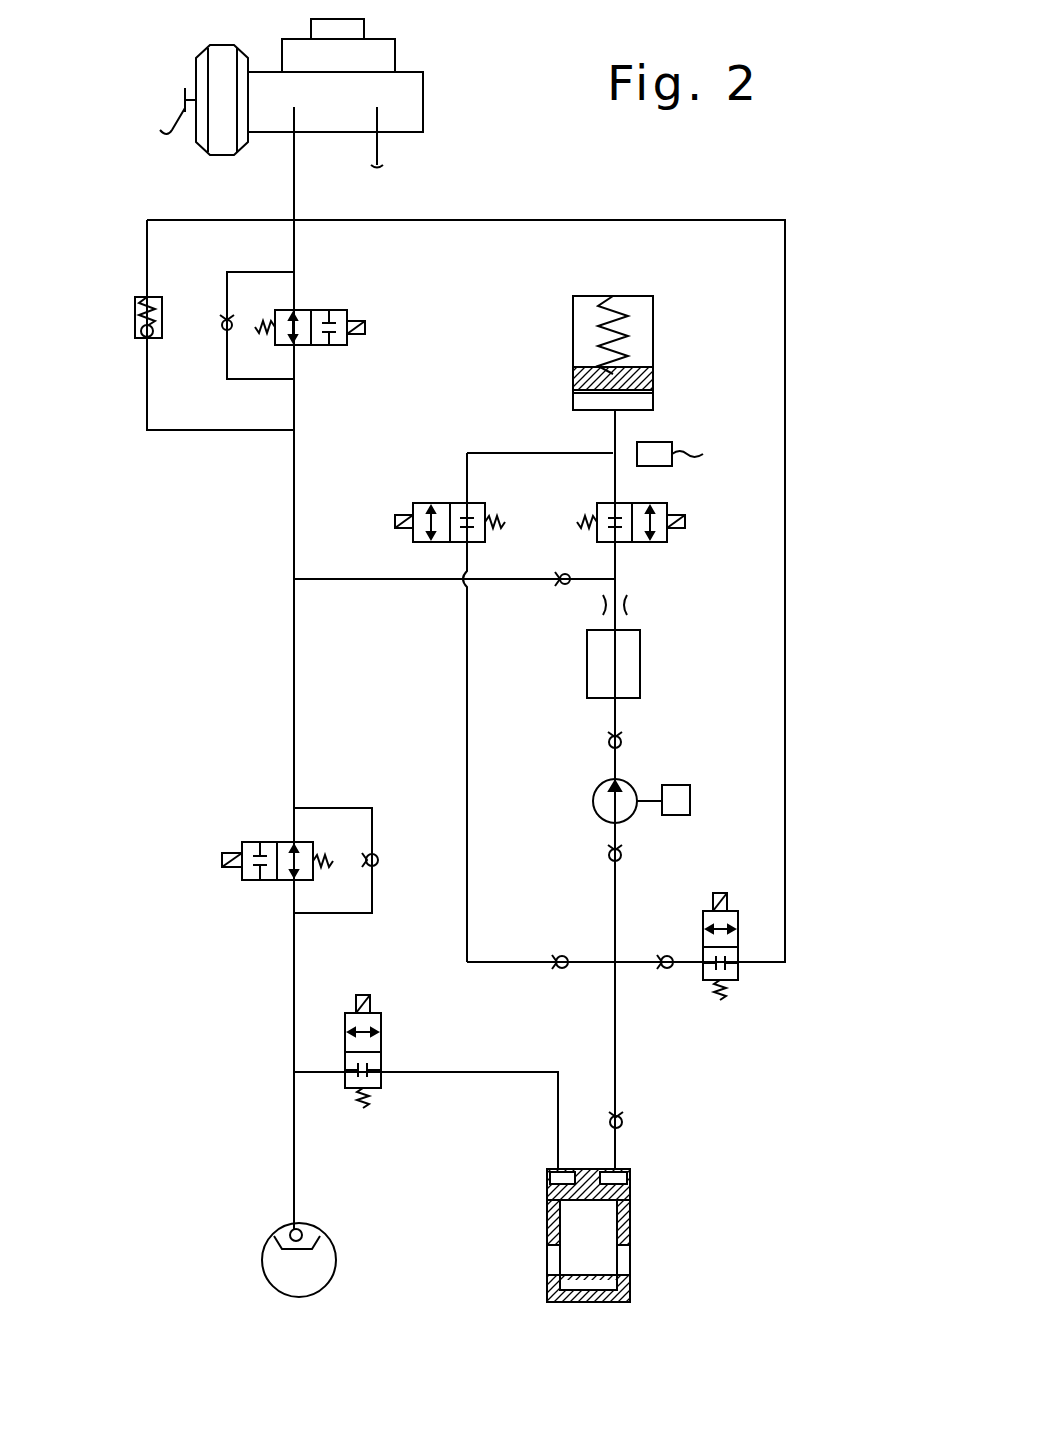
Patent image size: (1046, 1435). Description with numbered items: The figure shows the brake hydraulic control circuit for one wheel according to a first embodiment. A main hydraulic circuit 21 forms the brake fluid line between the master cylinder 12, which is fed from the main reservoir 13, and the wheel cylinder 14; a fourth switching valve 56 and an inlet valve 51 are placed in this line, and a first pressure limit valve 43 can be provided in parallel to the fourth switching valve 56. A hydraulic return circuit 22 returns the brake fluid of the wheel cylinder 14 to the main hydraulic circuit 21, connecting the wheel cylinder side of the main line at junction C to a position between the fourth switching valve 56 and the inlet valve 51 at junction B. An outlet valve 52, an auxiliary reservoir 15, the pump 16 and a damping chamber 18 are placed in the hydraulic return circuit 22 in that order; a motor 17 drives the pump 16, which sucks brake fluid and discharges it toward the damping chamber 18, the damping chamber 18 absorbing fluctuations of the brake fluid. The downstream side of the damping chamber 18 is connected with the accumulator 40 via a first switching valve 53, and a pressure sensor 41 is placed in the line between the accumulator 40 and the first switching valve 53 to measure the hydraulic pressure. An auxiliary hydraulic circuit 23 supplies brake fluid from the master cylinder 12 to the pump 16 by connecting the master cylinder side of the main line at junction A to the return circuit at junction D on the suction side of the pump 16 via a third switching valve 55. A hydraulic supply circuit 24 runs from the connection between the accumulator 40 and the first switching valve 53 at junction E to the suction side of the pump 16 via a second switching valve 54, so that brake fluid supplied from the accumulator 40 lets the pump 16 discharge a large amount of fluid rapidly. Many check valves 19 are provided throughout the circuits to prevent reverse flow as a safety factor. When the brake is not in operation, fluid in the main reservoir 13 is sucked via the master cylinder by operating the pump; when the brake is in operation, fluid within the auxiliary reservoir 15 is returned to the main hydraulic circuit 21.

The master cylinder 12 is at (415, 107).
The main reservoir 13 is at (385, 57).
The wheel cylinder 14 is at (285, 1230).
The auxiliary reservoir 15 is at (630, 1222).
The pump 16 is at (592, 798).
The motor 17 is at (690, 808).
The damping chamber 18 is at (640, 660).
The check valve 19 is at (223, 331).
The main hydraulic circuit 21 is at (290, 165).
The hydraulic return circuit 22 is at (612, 562).
The auxiliary hydraulic circuit 23 is at (785, 553).
The hydraulic supply circuit 24 is at (466, 680).
The accumulator 40 is at (640, 296).
The pressure sensor 41 is at (663, 442).
The first pressure limit valve 43 is at (133, 305).
The inlet valve 51 is at (250, 882).
The outlet valve 52 is at (378, 1090).
The first switching valve 53 is at (660, 545).
The second switching valve 54 is at (420, 503).
The third switching valve 55 is at (740, 975).
The fourth switching valve 56 is at (340, 310).